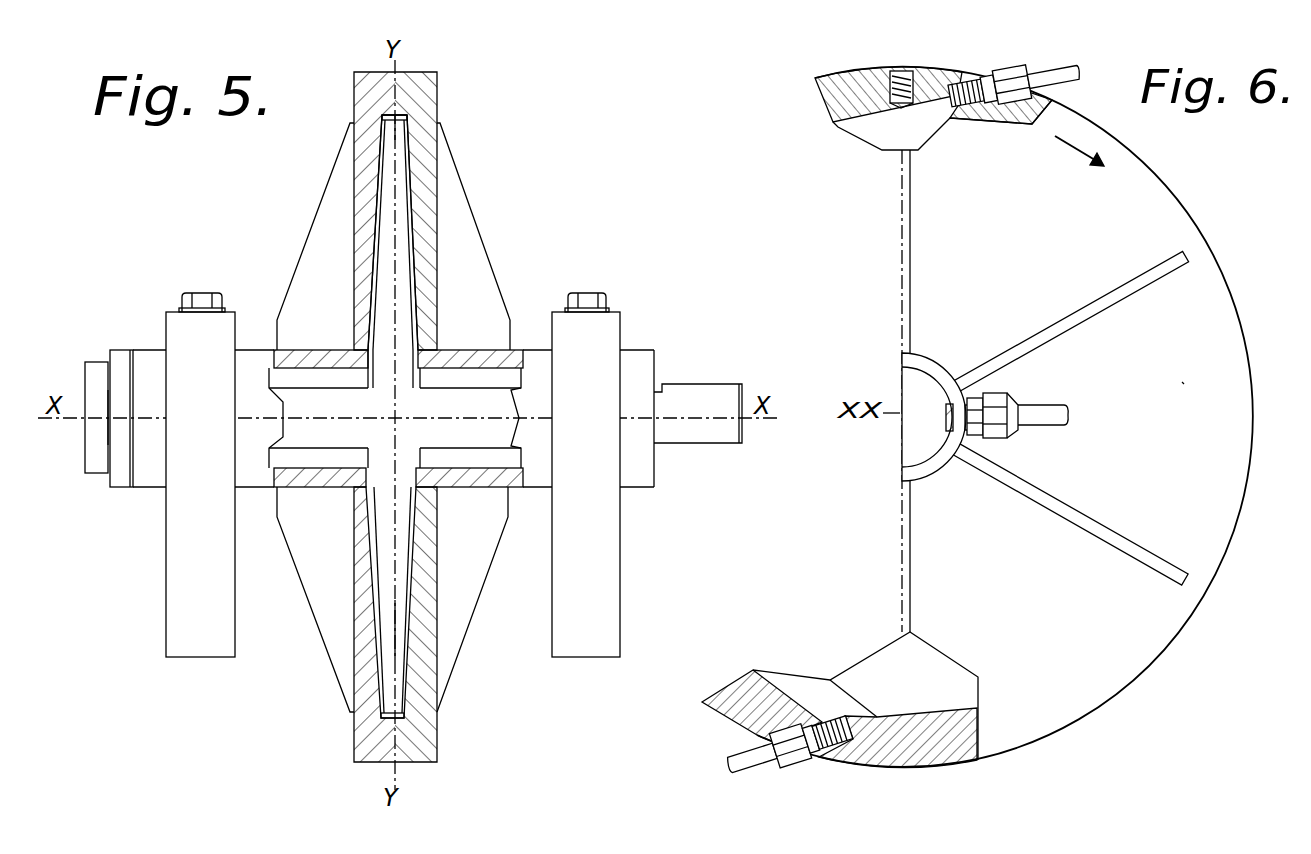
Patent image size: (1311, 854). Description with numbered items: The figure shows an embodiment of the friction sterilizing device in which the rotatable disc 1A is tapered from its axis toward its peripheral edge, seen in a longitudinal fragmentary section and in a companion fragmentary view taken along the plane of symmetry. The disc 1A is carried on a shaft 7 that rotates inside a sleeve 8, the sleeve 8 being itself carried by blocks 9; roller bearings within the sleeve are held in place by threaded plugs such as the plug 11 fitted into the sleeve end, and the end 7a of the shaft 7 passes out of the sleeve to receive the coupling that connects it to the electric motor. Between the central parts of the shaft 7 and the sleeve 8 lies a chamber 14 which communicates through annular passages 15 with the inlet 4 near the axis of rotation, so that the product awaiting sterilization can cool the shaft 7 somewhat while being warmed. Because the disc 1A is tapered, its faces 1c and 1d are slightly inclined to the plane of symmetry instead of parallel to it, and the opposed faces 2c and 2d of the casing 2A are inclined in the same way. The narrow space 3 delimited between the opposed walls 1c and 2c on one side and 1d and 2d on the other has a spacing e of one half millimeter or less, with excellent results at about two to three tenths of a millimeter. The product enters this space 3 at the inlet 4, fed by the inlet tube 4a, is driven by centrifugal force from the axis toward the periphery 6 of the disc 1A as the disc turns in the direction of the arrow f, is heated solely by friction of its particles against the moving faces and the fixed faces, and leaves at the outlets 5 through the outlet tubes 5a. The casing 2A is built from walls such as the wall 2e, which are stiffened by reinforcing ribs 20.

In FIG. 5, the casing 2A is at (428, 235).
In FIG. 6, the casing 2A is at (1252, 455).
In FIG. 5, the rotatable disc 1A is at (397, 267).
In FIG. 5, the face of the disc 1c is at (375, 268).
In FIG. 5, the face of the disc 1d is at (416, 292).
In FIG. 5, the face of the casing 2c is at (373, 302).
In FIG. 5, the face of the casing 2d is at (413, 310).
In FIG. 6, the wall 2e is at (1182, 382).
In FIG. 5, the space 3 is at (377, 610).
In FIG. 6, the inlet 4 is at (947, 420).
In FIG. 6, the inlet 4a is at (1044, 412).
In FIG. 6, the outlet 5 is at (914, 112).
In FIG. 6, the outlet tube 5a is at (960, 90).
In FIG. 5, the periphery 6 is at (397, 142).
In FIG. 5, the shaft 7 is at (481, 444).
In FIG. 5, the end of the shaft 7a is at (687, 433).
In FIG. 5, the sleeve 8 is at (330, 480).
In FIG. 5, the blocks 9 is at (178, 500).
In FIG. 5, the threaded plug 11 is at (126, 360).
In FIG. 5, the chamber 14 is at (460, 378).
In FIG. 5, the annular passages 15 is at (366, 367).
In FIG. 5, the reinforcing ribs 20 is at (320, 233).
In FIG. 6, the reinforcing ribs 20 is at (1112, 298).
In FIG. 5, the distance e is at (398, 630).
In FIG. 6, the direction of rotation f is at (1077, 164).